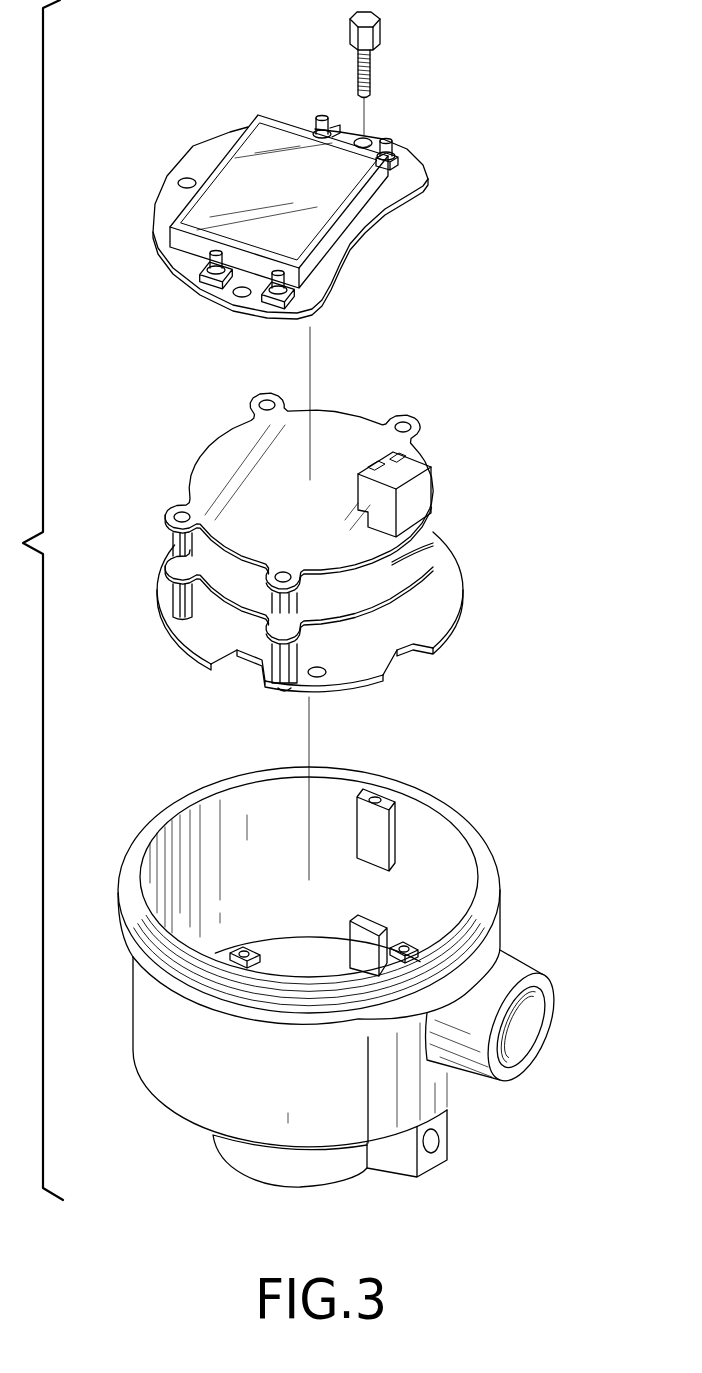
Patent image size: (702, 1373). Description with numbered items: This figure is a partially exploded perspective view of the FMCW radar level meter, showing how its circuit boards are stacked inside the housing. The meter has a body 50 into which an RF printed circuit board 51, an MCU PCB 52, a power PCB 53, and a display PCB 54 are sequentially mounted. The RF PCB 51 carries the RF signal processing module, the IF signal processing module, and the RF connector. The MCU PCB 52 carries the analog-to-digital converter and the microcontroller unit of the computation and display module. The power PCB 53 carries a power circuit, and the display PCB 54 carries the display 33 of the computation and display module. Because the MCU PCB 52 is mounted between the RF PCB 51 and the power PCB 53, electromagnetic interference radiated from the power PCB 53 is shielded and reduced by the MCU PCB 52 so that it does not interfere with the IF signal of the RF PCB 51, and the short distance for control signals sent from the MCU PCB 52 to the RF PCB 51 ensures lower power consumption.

The display 33 is at (220, 173).
The body 50 is at (487, 907).
The RF printed circuit board 51 is at (198, 642).
The MCU PCB 52 is at (420, 563).
The power PCB 53 is at (345, 425).
The display PCB 54 is at (413, 173).